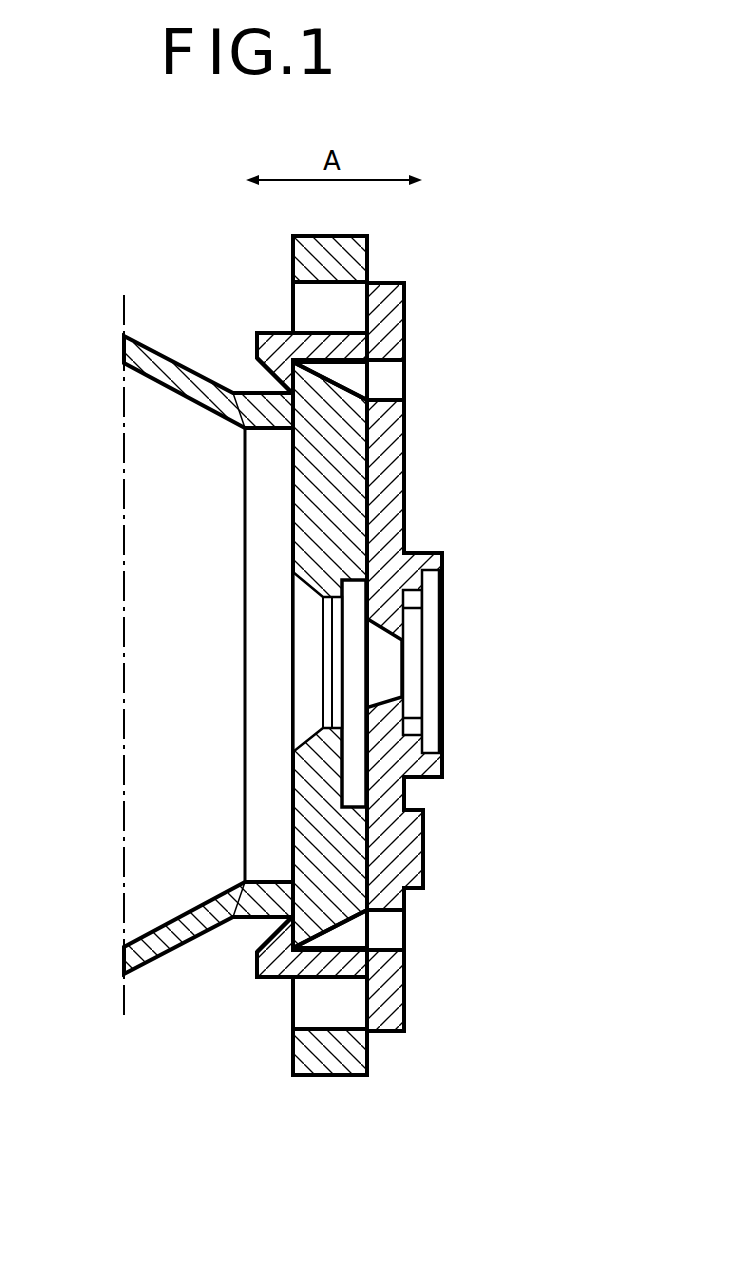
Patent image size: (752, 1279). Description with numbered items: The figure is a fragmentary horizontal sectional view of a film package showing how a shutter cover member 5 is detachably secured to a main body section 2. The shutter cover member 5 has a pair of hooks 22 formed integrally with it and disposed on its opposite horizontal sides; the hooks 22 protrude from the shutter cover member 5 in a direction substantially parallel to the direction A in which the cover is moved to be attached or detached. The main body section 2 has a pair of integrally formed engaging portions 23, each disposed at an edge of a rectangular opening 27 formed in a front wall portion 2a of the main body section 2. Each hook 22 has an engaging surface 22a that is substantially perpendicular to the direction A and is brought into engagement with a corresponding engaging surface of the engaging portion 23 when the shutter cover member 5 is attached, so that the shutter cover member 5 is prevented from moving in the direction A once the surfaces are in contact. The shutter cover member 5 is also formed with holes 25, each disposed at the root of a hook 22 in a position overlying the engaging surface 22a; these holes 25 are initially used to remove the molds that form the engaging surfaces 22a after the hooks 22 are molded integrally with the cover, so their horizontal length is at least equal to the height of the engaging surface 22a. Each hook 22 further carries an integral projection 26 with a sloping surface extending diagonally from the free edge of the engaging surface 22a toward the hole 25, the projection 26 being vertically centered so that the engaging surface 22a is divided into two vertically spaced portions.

The main body section 2 is at (160, 921).
The front wall portion 2a is at (367, 1047).
The shutter cover member 5 is at (383, 497).
The hook 22 is at (258, 333).
The engaging surface 22a is at (270, 373).
The engaging portion 23 is at (297, 397).
The hole 25 is at (388, 392).
The projection 26 is at (340, 366).
The rectangular opening 27 is at (308, 286).